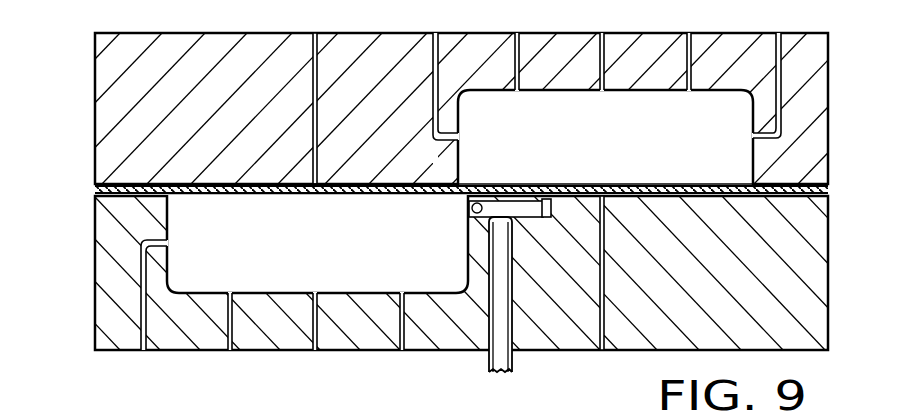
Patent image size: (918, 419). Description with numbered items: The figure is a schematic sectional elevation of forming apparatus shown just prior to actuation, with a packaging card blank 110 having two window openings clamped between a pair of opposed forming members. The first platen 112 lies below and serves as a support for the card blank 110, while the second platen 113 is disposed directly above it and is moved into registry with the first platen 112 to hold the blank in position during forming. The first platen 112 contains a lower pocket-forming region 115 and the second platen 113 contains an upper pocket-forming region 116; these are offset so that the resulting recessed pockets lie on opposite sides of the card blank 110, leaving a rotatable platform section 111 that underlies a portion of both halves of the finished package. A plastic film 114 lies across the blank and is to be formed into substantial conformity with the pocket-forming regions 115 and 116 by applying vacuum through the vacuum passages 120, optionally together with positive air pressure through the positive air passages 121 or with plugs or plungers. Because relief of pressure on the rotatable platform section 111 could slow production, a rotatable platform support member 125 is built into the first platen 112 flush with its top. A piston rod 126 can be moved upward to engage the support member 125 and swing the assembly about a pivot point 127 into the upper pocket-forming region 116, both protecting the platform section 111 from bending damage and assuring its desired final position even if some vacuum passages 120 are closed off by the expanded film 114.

The packaging card blank 110 is at (96, 189).
The rotatable platform section 111 is at (420, 197).
The first platen 112 is at (820, 277).
The second platen 113 is at (121, 88).
The plastic film 114 is at (272, 195).
The lower pocket-forming region 115 is at (305, 249).
The upper pocket-forming region 116 is at (630, 144).
The vacuum passages 120 is at (686, 51).
The positive air passages 121 is at (315, 33).
The rotatable platform support member 125 is at (530, 203).
The piston rod 126 is at (495, 357).
The pivot point 127 is at (472, 211).